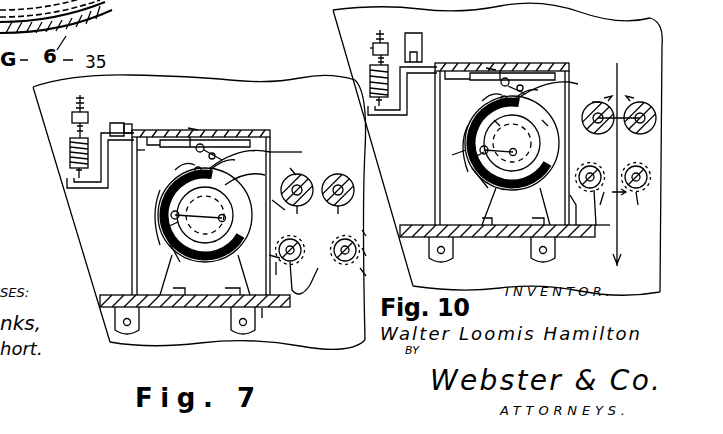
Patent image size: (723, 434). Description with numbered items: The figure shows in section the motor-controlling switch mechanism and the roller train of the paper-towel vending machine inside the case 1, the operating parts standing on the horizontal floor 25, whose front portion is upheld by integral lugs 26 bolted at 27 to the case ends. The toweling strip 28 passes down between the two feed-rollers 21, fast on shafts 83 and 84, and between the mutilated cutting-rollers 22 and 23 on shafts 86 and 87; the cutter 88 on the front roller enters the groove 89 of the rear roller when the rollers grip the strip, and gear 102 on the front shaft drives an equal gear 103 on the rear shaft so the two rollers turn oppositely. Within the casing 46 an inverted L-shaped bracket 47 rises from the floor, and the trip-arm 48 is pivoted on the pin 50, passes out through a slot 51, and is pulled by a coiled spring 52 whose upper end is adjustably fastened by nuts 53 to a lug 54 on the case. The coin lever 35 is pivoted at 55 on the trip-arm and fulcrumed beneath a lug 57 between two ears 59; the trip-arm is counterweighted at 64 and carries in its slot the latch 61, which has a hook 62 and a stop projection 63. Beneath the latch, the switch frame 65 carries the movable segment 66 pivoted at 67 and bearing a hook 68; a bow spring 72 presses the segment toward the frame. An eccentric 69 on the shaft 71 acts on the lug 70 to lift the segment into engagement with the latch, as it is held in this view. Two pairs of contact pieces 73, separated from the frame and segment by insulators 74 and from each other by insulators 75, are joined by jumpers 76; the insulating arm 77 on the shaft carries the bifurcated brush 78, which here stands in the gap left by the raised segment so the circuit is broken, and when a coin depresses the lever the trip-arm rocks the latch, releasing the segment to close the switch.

In FIG. 7, the case 1 is at (287, 137).
In FIG. 10, the case 1 is at (602, 56).
In FIG. 7, the feed-rollers 21 is at (320, 182).
In FIG. 10, the feed-rollers 21 is at (640, 100).
In FIG. 7, the cutting-roller 22 is at (281, 216).
In FIG. 10, the cutting-roller 22 is at (600, 236).
In FIG. 7, the cutting-roller 23 is at (376, 253).
In FIG. 10, the cutting-roller 23 is at (631, 250).
In FIG. 7, the floor 25 is at (102, 299).
In FIG. 10, the floor 25 is at (425, 226).
In FIG. 7, the lugs 26 is at (243, 325).
In FIG. 10, the lugs 26 is at (545, 253).
In FIG. 7, the bolts 27 is at (240, 318).
In FIG. 10, the bolts 27 is at (535, 254).
In FIG. 10, the paper strip 28 is at (625, 96).
In FIG. 7, the lever 35 is at (100, 132).
In FIG. 10, the lever 35 is at (400, 66).
In FIG. 7, the casing 46 is at (302, 152).
In FIG. 10, the casing 46 is at (584, 51).
In FIG. 7, the bracket 47 is at (194, 128).
In FIG. 10, the bracket 47 is at (500, 70).
In FIG. 7, the trip-arm 48 is at (176, 135).
In FIG. 10, the trip-arm 48 is at (452, 63).
In FIG. 7, the pin 50 is at (200, 145).
In FIG. 10, the pin 50 is at (507, 78).
In FIG. 7, the slot 51 is at (137, 158).
In FIG. 7, the coiled spring 52 is at (70, 162).
In FIG. 10, the coiled spring 52 is at (370, 88).
In FIG. 7, the nuts 53 is at (74, 112).
In FIG. 10, the nuts 53 is at (376, 44).
In FIG. 7, the lug 54 is at (72, 118).
In FIG. 10, the lug 54 is at (373, 50).
In FIG. 7, the pivot 55 is at (162, 132).
In FIG. 10, the pivot 55 is at (441, 60).
In FIG. 7, the lug 57 is at (116, 123).
In FIG. 10, the lug 57 is at (437, 90).
In FIG. 7, the ears 59 is at (128, 124).
In FIG. 7, the latch 61 is at (208, 150).
In FIG. 10, the latch 61 is at (516, 86).
In FIG. 7, the hook 62 is at (214, 154).
In FIG. 10, the hook 62 is at (530, 73).
In FIG. 7, the stop projection 63 is at (190, 128).
In FIG. 10, the stop projection 63 is at (488, 64).
In FIG. 7, the counterweight 64 is at (270, 152).
In FIG. 10, the counterweight 64 is at (570, 42).
In FIG. 7, the switch frame 65 is at (265, 322).
In FIG. 7, the movable segment 66 is at (175, 170).
In FIG. 10, the movable segment 66 is at (482, 101).
In FIG. 7, the pivot 67 is at (165, 228).
In FIG. 10, the pivot 67 is at (470, 160).
In FIG. 7, the hook 68 is at (196, 168).
In FIG. 10, the hook 68 is at (500, 97).
In FIG. 7, the eccentric 69 is at (172, 214).
In FIG. 10, the eccentric 69 is at (470, 116).
In FIG. 7, the lug 70 is at (222, 163).
In FIG. 10, the lug 70 is at (528, 92).
In FIG. 7, the shaft 71 is at (237, 222).
In FIG. 10, the shaft 71 is at (500, 167).
In FIG. 7, the bow spring 72 is at (172, 255).
In FIG. 10, the bow spring 72 is at (452, 155).
In FIG. 7, the contact pieces 73 is at (210, 262).
In FIG. 10, the contact pieces 73 is at (498, 190).
In FIG. 7, the segmental insulators 74 is at (185, 262).
In FIG. 10, the segmental insulators 74 is at (482, 190).
In FIG. 7, the segmental insulator 75 is at (160, 300).
In FIG. 10, the segmental insulator 75 is at (460, 194).
In FIG. 7, the jumper 76 is at (168, 240).
In FIG. 10, the jumper 76 is at (472, 168).
In FIG. 7, the arm 77 is at (200, 227).
In FIG. 10, the arm 77 is at (500, 149).
In FIG. 7, the brush 78 is at (298, 170).
In FIG. 10, the brush 78 is at (546, 120).
In FIG. 7, the shaft 83 is at (311, 220).
In FIG. 10, the shaft 83 is at (595, 100).
In FIG. 7, the shaft 84 is at (353, 220).
In FIG. 10, the shaft 84 is at (617, 68).
In FIG. 7, the shaft 86 is at (273, 265).
In FIG. 10, the shaft 86 is at (576, 207).
In FIG. 7, the shaft 87 is at (376, 234).
In FIG. 10, the shaft 87 is at (628, 243).
In FIG. 7, the cutter 88 is at (298, 299).
In FIG. 10, the cutter 88 is at (611, 210).
In FIG. 7, the groove 89 is at (375, 274).
In FIG. 10, the groove 89 is at (634, 210).
In FIG. 7, the gear 102 is at (300, 262).
In FIG. 10, the gear 102 is at (610, 152).
In FIG. 7, the gear 103 is at (345, 265).
In FIG. 10, the gear 103 is at (651, 230).